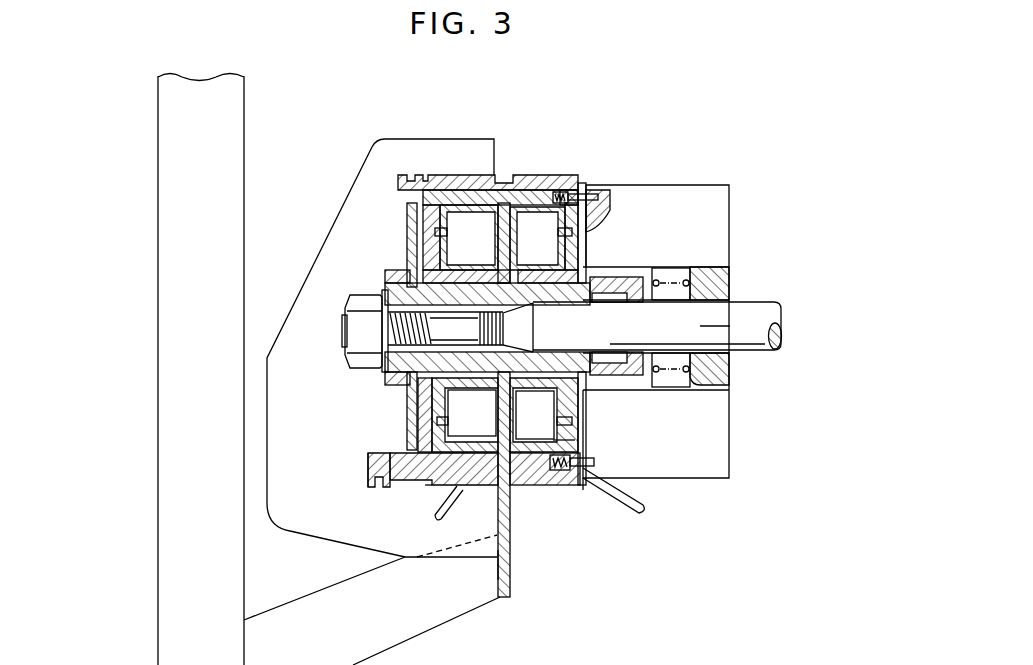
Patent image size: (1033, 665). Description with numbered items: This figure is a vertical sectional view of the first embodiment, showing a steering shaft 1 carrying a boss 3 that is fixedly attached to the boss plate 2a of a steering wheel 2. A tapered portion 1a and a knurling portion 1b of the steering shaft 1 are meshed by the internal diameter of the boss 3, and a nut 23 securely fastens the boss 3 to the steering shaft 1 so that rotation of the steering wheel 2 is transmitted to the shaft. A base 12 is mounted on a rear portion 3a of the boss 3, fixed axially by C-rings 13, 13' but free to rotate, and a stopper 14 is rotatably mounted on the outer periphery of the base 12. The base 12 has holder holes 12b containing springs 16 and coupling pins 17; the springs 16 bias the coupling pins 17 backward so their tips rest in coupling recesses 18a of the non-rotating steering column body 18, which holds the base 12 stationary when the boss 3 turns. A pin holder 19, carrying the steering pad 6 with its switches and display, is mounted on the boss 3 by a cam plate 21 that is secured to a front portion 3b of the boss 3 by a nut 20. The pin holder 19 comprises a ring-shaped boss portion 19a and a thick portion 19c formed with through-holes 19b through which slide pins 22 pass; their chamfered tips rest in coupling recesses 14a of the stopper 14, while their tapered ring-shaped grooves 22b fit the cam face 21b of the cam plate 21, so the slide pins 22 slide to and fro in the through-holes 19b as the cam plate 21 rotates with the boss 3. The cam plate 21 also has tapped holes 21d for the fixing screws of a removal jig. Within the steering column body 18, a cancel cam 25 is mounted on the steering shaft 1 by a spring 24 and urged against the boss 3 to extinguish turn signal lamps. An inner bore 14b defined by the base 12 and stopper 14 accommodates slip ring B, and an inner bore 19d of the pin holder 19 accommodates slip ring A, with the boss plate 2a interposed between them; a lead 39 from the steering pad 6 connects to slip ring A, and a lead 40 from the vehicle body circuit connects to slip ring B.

The steering shaft 1 is at (760, 319).
The tapered portion 1a is at (588, 358).
The knurling portion 1b is at (587, 400).
The steering wheel 2 is at (177, 326).
The boss plate 2a is at (513, 546).
The boss 3 is at (392, 292).
The rear portion of boss 3a is at (607, 272).
The front portion of boss 3b is at (392, 356).
The steering pad 6 is at (320, 242).
The base 12 is at (580, 187).
The holder holes 12b is at (600, 483).
The C-ring 13 is at (580, 219).
The C-ring 13' is at (486, 201).
The stopper 14 is at (542, 188).
The coupling recesses 14a is at (550, 485).
The inner bore 14b is at (553, 432).
The springs 16 is at (563, 192).
The coupling pins 17 is at (570, 195).
The steering column body 18 is at (672, 202).
The coupling recesses 18a is at (600, 192).
The pin holder 19 is at (443, 180).
The ring-shaped boss portion 19a is at (425, 446).
The through-holes 19b is at (512, 557).
The thick portion 19c is at (470, 485).
The inner bore 19d is at (430, 481).
The nut 20 is at (397, 268).
The cam plate 21 is at (407, 412).
The cam face 21b is at (374, 448).
The tapped holes 21d is at (410, 242).
The slide pins 22 is at (474, 190).
The ring-shaped grooves 22b is at (378, 484).
The nut 23 is at (357, 300).
The spring 24 is at (688, 284).
The cancel cam 25 is at (612, 378).
The lead 39 is at (512, 568).
The lead 40 is at (645, 508).
The slip ring A is at (516, 456).
The slip ring B is at (546, 470).